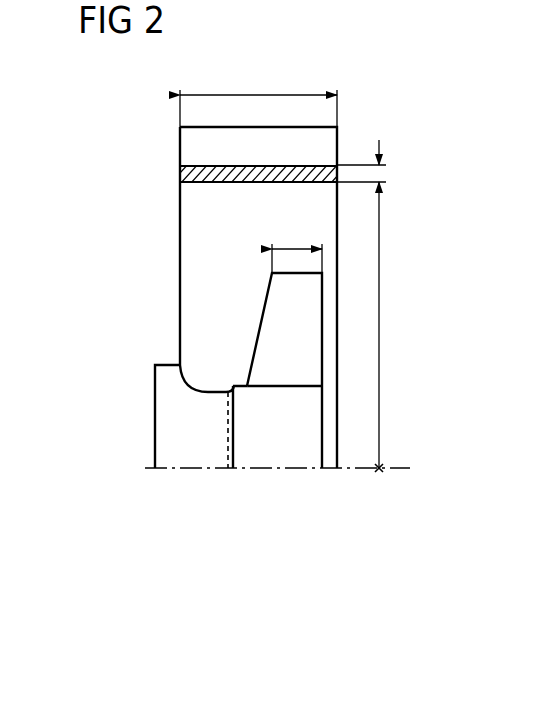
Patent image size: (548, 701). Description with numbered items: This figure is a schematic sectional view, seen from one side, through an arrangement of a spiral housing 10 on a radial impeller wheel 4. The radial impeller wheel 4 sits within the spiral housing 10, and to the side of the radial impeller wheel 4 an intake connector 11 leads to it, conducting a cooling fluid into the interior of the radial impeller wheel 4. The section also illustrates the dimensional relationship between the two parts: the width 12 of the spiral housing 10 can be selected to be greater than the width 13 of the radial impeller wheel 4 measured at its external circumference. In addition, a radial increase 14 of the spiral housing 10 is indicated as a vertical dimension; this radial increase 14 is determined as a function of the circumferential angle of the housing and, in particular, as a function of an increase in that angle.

The radial impeller wheel 4 is at (258, 322).
The spiral housing 10 is at (180, 240).
The intake connector 11 is at (163, 409).
The width of the spiral housing 12 is at (250, 92).
The width of the radial impeller wheel 13 is at (297, 248).
The radial increase 14 is at (380, 173).